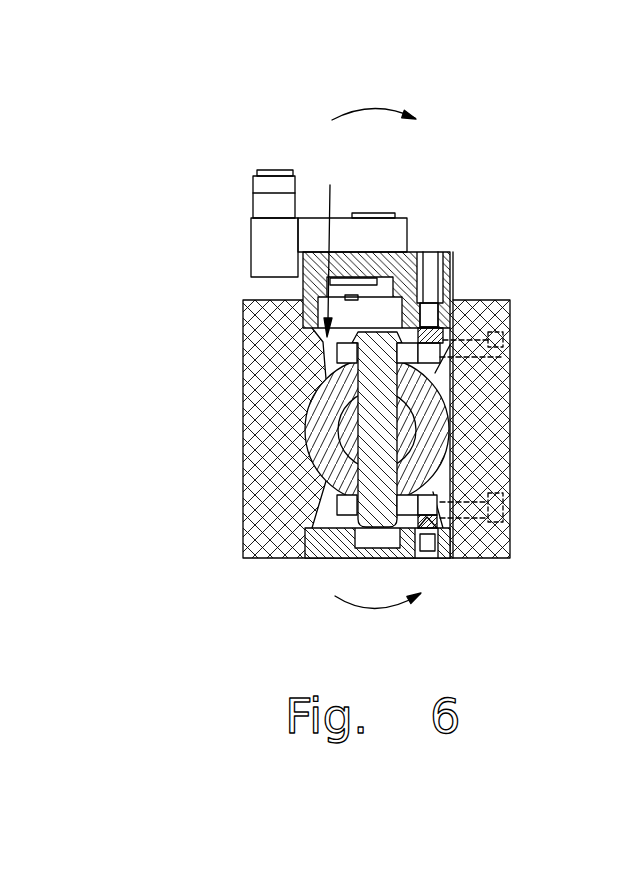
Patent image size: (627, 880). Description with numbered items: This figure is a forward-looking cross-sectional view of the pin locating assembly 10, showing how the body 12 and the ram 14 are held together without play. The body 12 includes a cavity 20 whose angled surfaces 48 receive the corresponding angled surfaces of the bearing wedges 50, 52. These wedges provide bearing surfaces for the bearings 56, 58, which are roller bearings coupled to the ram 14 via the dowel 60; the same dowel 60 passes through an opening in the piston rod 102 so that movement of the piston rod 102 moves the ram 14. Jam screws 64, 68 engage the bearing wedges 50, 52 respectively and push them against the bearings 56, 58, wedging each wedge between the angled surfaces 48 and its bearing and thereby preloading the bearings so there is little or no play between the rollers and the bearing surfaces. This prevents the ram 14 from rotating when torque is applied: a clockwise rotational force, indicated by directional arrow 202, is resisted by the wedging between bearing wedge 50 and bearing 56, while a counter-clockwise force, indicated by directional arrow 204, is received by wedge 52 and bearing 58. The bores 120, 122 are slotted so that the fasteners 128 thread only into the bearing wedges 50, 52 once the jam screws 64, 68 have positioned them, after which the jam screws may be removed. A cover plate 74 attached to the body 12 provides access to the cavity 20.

The pin locating assembly 10 is at (492, 156).
The body 12 is at (243, 376).
The ram 14 is at (307, 410).
The cavity 20 is at (322, 247).
The angled surfaces 48 is at (443, 367).
The bearing wedge 50 is at (445, 298).
The bearing wedge 52 is at (467, 458).
The bearing 56 is at (340, 355).
The bearing 58 is at (340, 503).
The dowel 60 is at (373, 468).
The jam screw 64 is at (430, 303).
The jam screw 68 is at (433, 556).
The cover plate 74 is at (320, 558).
The piston rod 102 is at (460, 402).
The bore 120 is at (467, 355).
The bore 122 is at (455, 490).
The fasteners 128 is at (503, 343).
The directional arrow 202 is at (380, 105).
The directional arrow 204 is at (369, 610).